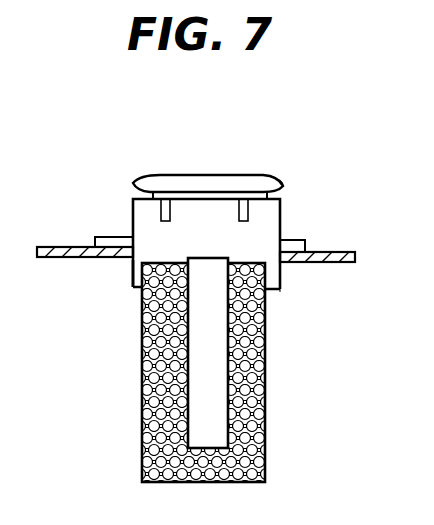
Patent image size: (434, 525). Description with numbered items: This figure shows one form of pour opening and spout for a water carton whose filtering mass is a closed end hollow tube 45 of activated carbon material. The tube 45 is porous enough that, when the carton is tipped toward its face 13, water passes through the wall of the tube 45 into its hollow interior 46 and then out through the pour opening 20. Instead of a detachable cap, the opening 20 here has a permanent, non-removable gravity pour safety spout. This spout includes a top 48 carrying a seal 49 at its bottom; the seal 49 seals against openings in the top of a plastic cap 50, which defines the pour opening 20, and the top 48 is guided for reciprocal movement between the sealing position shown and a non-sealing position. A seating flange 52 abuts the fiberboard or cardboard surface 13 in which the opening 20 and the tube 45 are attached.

The face 13 is at (327, 252).
The pour opening 20 is at (133, 200).
The closed end hollow tube 45 is at (301, 339).
The hollow interior 46 is at (199, 393).
The top 48 is at (182, 172).
The seal 49 is at (283, 188).
The plastic cap 50 is at (147, 240).
The seating flange 52 is at (98, 238).